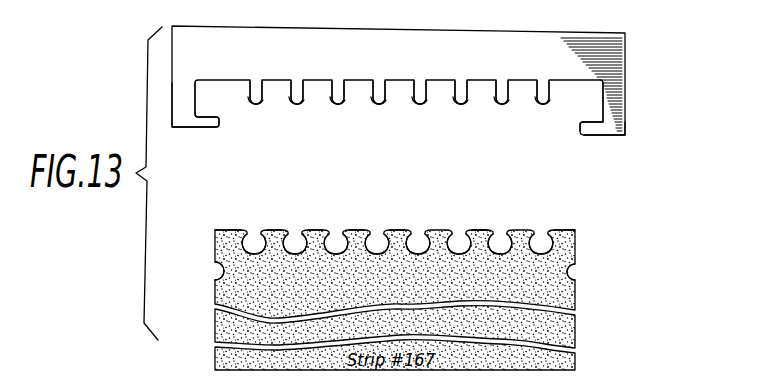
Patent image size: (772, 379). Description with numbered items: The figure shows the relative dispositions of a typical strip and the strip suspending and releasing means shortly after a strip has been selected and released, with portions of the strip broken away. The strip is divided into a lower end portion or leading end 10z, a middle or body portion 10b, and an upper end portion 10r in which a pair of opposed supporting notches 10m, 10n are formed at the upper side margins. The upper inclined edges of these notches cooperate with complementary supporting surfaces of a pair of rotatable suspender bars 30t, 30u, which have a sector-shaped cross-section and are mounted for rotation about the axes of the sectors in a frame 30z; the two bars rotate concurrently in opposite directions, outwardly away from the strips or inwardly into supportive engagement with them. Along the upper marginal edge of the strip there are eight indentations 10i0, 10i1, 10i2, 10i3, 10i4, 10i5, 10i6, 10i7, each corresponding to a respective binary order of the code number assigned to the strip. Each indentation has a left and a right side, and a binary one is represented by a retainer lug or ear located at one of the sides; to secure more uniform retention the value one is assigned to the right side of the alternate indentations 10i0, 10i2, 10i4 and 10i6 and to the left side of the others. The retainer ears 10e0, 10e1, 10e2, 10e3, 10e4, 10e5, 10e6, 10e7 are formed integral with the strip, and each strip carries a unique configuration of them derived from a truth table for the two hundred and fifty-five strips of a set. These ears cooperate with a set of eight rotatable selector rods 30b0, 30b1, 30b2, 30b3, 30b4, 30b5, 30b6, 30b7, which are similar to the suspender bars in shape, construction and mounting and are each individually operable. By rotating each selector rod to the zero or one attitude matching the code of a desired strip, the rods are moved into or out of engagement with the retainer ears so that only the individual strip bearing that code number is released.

The frame 30z is at (610, 50).
The suspender bar 30u is at (588, 138).
The suspender bar 30t is at (218, 130).
The selector rod 30b0 is at (544, 107).
The selector rod 30b1 is at (503, 107).
The selector rod 30b2 is at (462, 107).
The selector rod 30b3 is at (421, 107).
The selector rod 30b4 is at (381, 107).
The selector rod 30b5 is at (339, 107).
The selector rod 30b6 is at (299, 107).
The selector rod 30b7 is at (258, 106).
The notch 10m is at (220, 267).
The upper end portion 10r is at (218, 282).
The body portion 10b is at (217, 323).
The leading end 10z is at (220, 358).
The notch 10n is at (582, 272).
The indentation 10i0 is at (541, 243).
The indentation 10i1 is at (500, 243).
The indentation 10i2 is at (459, 243).
The indentation 10i3 is at (418, 243).
The indentation 10i4 is at (377, 242).
The indentation 10i5 is at (336, 242).
The indentation 10i6 is at (295, 242).
The indentation 10i7 is at (253, 242).
The retainer ear 10e0 is at (557, 252).
The retainer ear 10e1 is at (478, 250).
The retainer ear 10e2 is at (473, 250).
The retainer ear 10e3 is at (396, 248).
The retainer ear 10e4 is at (357, 247).
The retainer ear 10e5 is at (313, 248).
The retainer ear 10e6 is at (275, 248).
The retainer ear 10e7 is at (228, 248).